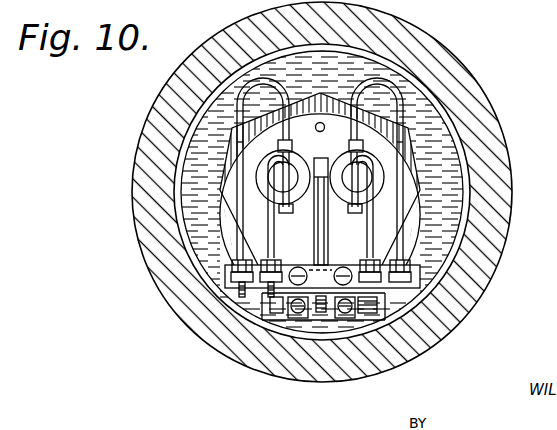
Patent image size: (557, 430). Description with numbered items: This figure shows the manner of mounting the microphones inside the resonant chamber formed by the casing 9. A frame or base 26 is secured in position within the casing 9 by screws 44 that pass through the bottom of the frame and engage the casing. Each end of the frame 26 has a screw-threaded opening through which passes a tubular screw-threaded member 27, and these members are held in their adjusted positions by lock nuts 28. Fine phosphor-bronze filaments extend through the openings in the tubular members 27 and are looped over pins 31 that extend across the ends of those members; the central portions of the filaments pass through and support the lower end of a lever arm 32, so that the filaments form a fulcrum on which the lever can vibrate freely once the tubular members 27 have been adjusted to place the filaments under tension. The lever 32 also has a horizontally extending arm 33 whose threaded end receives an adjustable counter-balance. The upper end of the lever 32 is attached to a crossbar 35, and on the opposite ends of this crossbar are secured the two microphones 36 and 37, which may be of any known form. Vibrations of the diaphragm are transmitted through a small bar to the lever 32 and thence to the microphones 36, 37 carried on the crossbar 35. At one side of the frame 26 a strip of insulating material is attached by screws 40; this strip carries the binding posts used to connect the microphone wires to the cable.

The casing 9 is at (497, 175).
The tubular screw-threaded members 27 is at (240, 307).
The crossbar 35 is at (316, 203).
The microphone 36 is at (264, 186).
The microphone 37 is at (375, 180).
The lever arm 32 is at (328, 246).
The pins 31 is at (263, 297).
The screws 44 is at (318, 320).
The frame or base 26 is at (319, 297).
The screws 40 is at (293, 320).
The horizontally extending arm 33 is at (345, 313).
The lock nuts 28 is at (277, 313).